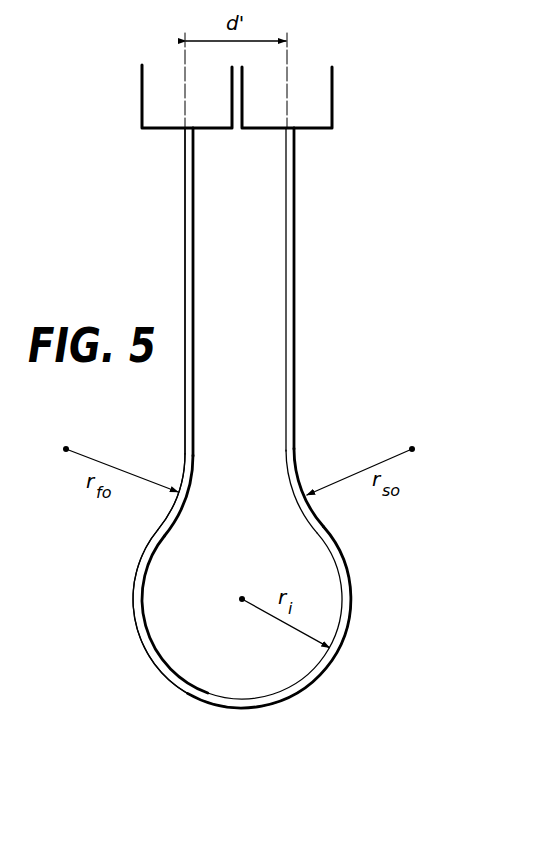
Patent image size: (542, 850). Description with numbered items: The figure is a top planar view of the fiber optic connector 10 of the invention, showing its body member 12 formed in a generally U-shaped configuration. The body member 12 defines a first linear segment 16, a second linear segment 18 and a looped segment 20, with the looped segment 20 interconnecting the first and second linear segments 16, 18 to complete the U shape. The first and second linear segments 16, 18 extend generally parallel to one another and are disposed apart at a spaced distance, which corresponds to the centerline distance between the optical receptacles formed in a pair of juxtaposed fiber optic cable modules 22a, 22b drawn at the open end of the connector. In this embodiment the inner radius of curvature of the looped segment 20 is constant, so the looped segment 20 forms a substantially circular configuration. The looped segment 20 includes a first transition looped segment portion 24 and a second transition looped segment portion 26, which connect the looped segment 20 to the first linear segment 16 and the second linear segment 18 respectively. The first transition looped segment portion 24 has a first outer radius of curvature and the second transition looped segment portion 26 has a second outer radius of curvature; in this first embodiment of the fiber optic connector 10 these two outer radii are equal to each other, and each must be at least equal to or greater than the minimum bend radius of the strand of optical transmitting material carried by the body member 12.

The fiber optic connector 10 is at (336, 279).
The body member 12 is at (354, 576).
The first linear segment 16 is at (185, 210).
The second linear segment 18 is at (294, 214).
The looped segment 20 is at (325, 671).
The fiber optic cable module 22a is at (152, 91).
The fiber optic cable module 22b is at (318, 103).
The first transition looped segment portion 24 is at (185, 482).
The second transition looped segment portion 26 is at (297, 480).